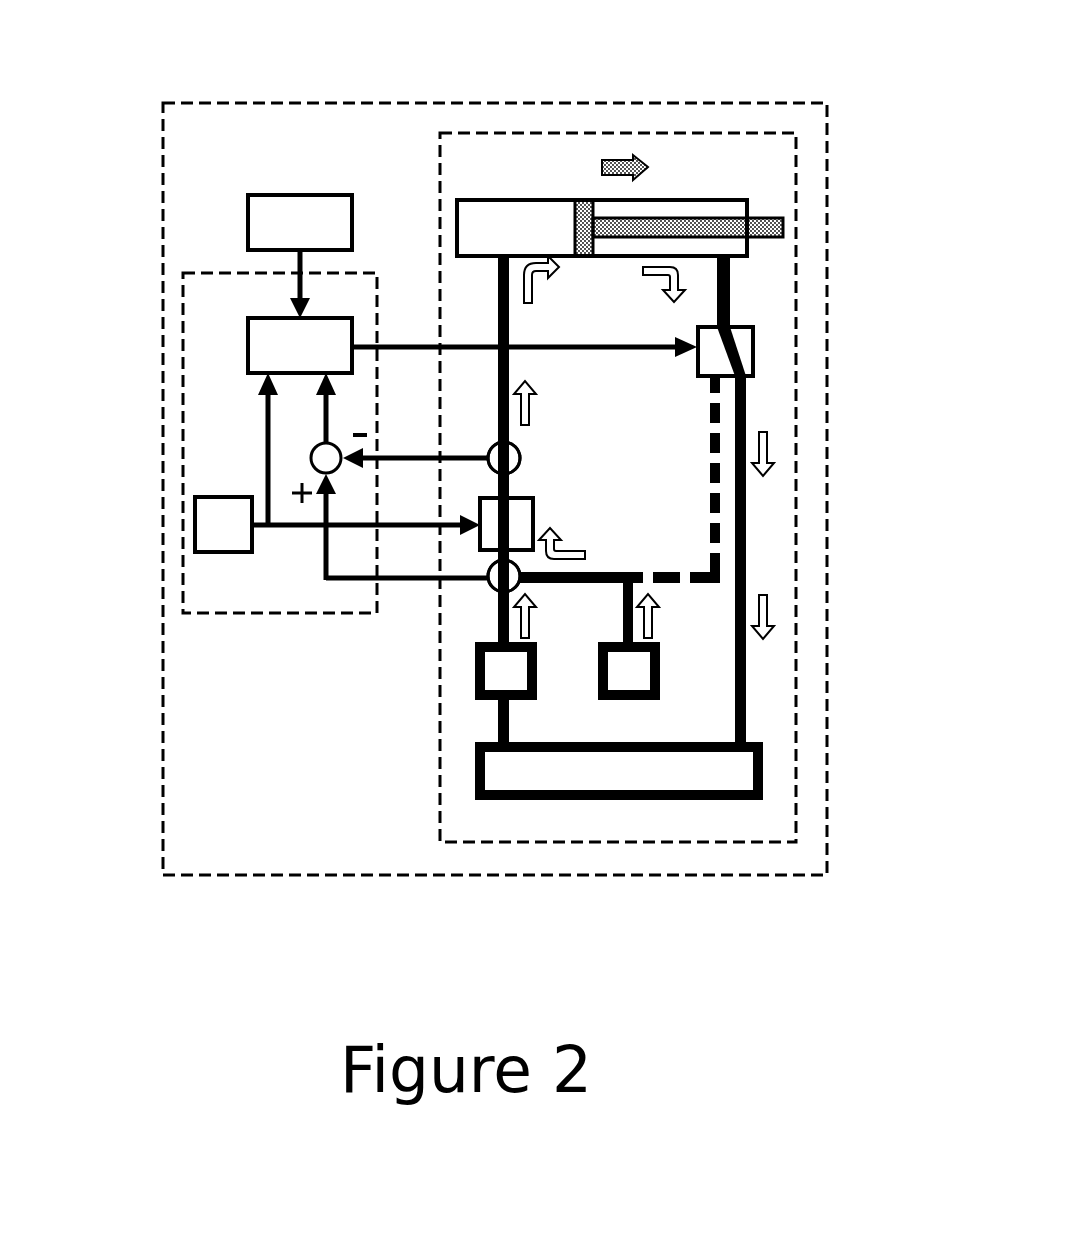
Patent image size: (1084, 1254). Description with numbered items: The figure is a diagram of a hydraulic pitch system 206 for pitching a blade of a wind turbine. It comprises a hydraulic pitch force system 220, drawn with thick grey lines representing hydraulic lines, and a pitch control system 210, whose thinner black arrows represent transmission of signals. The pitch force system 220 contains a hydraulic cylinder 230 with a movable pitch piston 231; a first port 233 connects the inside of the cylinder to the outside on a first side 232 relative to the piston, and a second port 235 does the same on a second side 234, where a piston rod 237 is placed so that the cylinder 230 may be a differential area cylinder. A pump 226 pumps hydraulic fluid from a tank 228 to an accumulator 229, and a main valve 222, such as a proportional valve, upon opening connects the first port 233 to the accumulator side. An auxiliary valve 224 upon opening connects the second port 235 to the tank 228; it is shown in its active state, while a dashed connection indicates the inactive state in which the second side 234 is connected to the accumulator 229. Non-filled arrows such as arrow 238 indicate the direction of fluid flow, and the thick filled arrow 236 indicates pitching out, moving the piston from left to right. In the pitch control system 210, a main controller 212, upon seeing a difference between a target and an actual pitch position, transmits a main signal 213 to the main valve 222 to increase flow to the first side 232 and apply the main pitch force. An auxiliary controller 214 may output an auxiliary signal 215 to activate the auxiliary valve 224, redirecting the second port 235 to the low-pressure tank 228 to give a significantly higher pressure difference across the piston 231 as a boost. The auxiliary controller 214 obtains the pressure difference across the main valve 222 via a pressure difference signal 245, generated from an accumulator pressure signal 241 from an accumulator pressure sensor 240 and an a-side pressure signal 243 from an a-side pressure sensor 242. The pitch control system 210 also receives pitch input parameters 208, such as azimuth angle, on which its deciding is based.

The hydraulic pitch system 206 is at (407, 842).
The pitch input parameters 208 is at (268, 225).
The pitch control system 210 is at (197, 295).
The main controller 212 is at (205, 518).
The main signal 213 is at (308, 525).
The auxiliary controller 214 is at (257, 360).
The auxiliary signal 215 is at (397, 343).
The pitch force system 220 is at (678, 827).
The main valve 222 is at (525, 515).
The auxiliary valve 224 is at (742, 337).
The pump 226 is at (502, 683).
The tank 228 is at (602, 770).
The accumulator 229 is at (643, 673).
The hydraulic cylinder 230 is at (690, 172).
The pitch piston 231 is at (585, 215).
The first side 232 is at (530, 213).
The first port 233 is at (506, 236).
The second side 234 is at (685, 208).
The second port 235 is at (750, 268).
The thick filled arrow 236 is at (622, 163).
The piston rod 237 is at (772, 223).
The arrow 238 is at (772, 610).
The accumulator pressure sensor 240 is at (495, 580).
The accumulator pressure signal 241 is at (410, 580).
The a-side pressure sensor 242 is at (520, 455).
The a-side pressure signal 243 is at (430, 455).
The pressure difference signal 245 is at (322, 425).